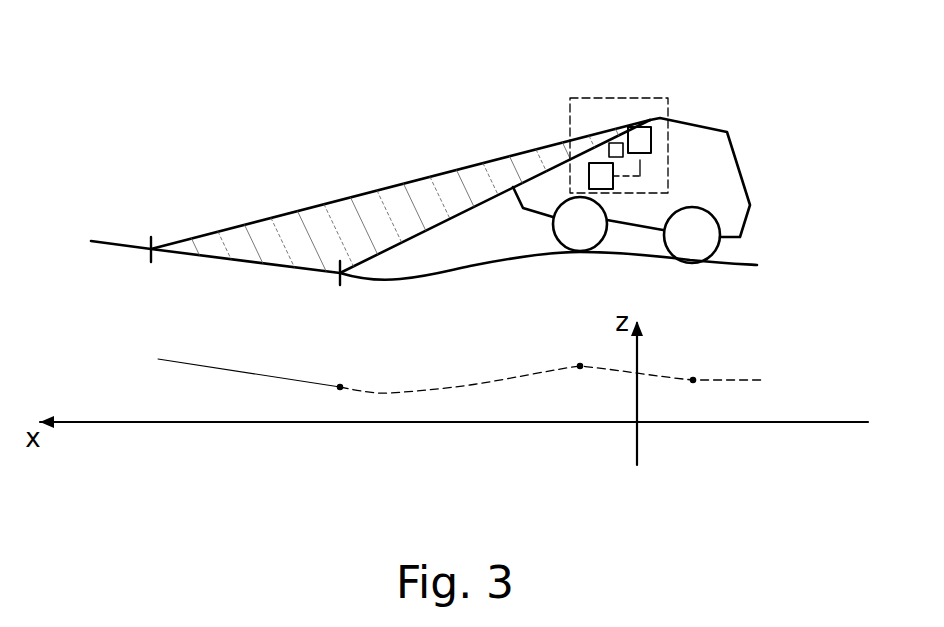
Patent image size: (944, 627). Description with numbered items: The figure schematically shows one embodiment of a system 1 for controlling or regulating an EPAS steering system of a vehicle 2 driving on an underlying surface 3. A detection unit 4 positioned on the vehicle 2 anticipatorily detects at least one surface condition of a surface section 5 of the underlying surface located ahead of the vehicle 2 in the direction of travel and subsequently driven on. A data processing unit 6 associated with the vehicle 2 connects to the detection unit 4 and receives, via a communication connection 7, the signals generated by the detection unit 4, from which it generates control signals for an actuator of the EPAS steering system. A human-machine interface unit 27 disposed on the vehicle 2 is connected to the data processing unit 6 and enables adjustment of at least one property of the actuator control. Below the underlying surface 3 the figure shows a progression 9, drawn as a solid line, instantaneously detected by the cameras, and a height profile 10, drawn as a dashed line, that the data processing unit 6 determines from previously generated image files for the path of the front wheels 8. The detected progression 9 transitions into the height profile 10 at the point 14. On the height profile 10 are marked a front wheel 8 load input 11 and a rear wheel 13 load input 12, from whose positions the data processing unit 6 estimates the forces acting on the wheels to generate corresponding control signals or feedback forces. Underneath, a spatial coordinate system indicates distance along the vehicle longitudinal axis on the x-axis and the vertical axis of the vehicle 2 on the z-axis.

The system 1 is at (641, 98).
The vehicle 2 is at (738, 153).
The underlying surface 3 is at (649, 266).
The detection unit 4 is at (652, 147).
The surface section 5 is at (243, 263).
The data processing unit 6 is at (560, 162).
The communication connection 7 is at (640, 160).
The front wheels 8 is at (553, 232).
The progression 9 is at (178, 362).
The height profile 10 is at (745, 378).
The front wheel load input 11 is at (580, 364).
The rear wheel load input 12 is at (695, 378).
The rear wheel 13 is at (718, 254).
The point 14 is at (340, 385).
The human-machine interface unit 27 is at (601, 146).